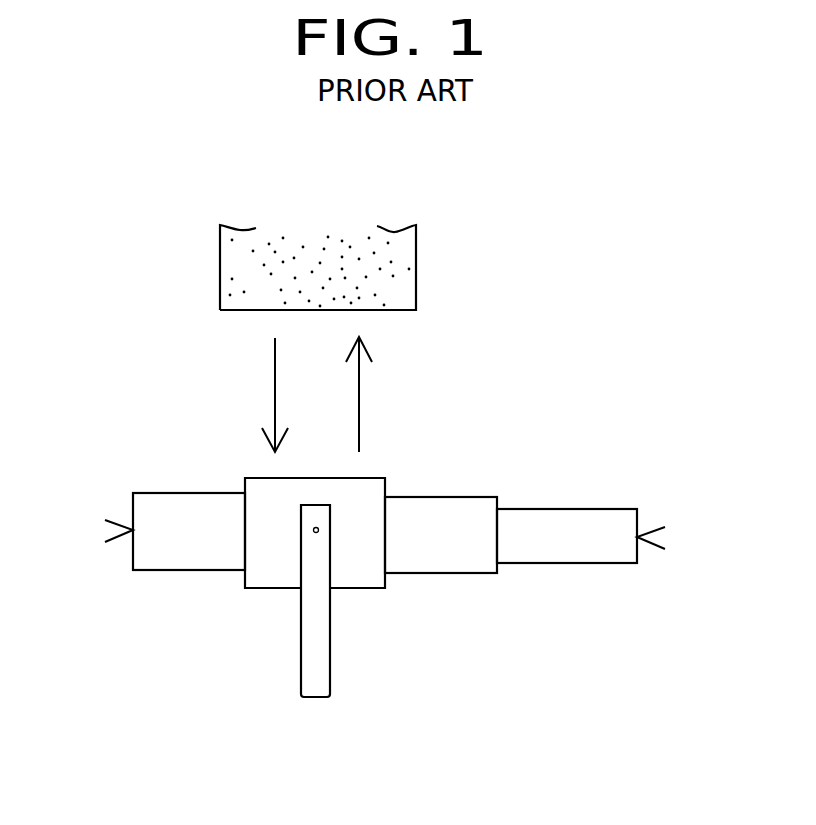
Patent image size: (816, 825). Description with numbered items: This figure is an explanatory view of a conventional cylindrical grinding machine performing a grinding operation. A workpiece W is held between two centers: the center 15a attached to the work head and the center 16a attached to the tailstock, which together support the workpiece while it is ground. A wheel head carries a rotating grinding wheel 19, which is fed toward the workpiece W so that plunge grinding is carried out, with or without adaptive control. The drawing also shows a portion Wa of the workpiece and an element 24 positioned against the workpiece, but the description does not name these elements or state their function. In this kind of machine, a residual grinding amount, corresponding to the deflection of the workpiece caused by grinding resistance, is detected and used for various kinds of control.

The grinding wheel 19 is at (233, 254).
The center 15a is at (112, 527).
The center 16a is at (660, 530).
The workpiece W is at (457, 557).
The workpiece flange portion Wa is at (273, 588).
The blade / fin member 24 is at (315, 660).